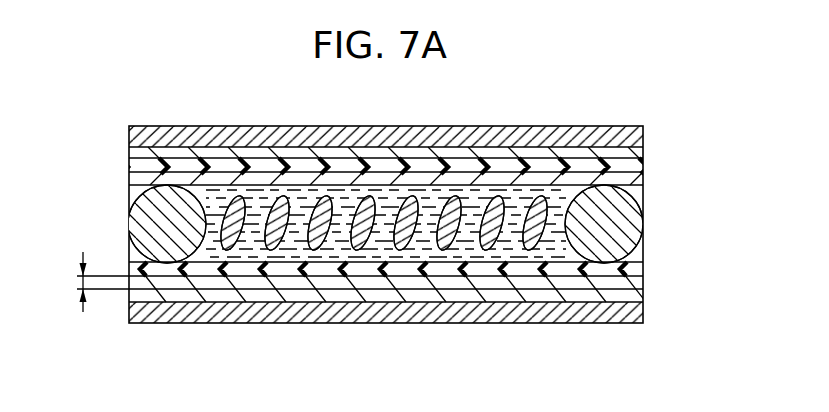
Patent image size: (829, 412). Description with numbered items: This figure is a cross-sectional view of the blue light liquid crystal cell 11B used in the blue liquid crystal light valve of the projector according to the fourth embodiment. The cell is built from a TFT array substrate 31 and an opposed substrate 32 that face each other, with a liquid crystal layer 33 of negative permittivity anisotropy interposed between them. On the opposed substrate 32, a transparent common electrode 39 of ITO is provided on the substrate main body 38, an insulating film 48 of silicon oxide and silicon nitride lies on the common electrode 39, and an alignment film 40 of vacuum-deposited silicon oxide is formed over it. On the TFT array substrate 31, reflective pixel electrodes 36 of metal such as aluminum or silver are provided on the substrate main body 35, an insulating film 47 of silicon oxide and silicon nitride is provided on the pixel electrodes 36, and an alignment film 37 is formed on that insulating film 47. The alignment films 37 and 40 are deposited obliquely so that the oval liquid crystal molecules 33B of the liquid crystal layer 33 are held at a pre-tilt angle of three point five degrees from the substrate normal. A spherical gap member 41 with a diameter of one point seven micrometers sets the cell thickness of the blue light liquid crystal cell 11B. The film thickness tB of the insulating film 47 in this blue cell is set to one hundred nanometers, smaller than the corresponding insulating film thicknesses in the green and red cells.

The blue light liquid crystal cell 11B is at (238, 102).
The opposed substrate 32 is at (729, 108).
The substrate main body 38 is at (633, 138).
The common electrode 39 is at (633, 152).
The insulating film 48 is at (633, 165).
The alignment film 40 is at (633, 178).
The spherical gap member 41 is at (426, 287).
The liquid crystal layer 33 is at (403, 252).
The liquid crystal molecules 33B is at (495, 238).
The TFT array substrate 31 is at (729, 240).
The alignment film 37 is at (633, 268).
The insulating film 47 is at (633, 282).
The pixel electrode 36 is at (633, 295).
The substrate main body 35 is at (633, 315).
The film thickness tB is at (82, 283).